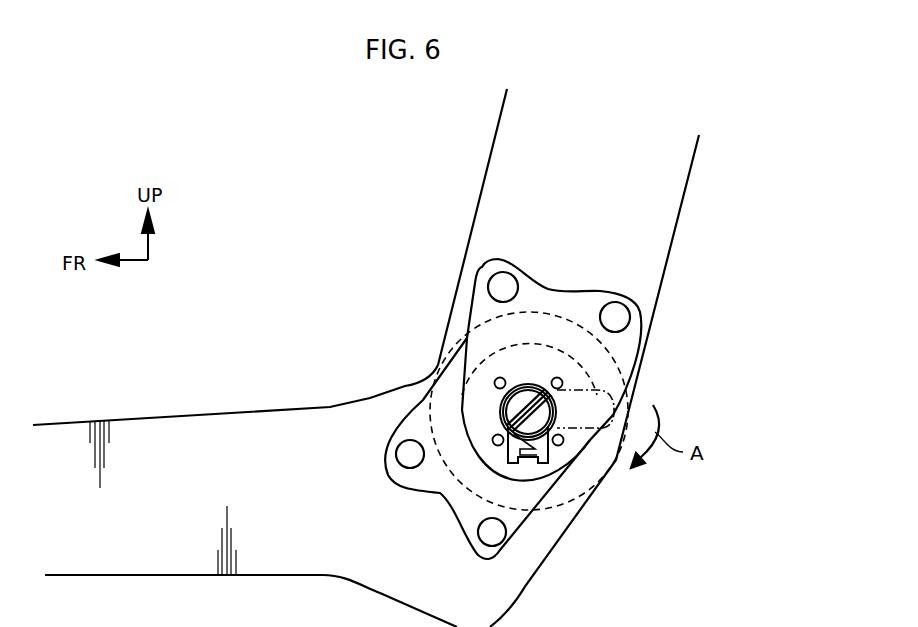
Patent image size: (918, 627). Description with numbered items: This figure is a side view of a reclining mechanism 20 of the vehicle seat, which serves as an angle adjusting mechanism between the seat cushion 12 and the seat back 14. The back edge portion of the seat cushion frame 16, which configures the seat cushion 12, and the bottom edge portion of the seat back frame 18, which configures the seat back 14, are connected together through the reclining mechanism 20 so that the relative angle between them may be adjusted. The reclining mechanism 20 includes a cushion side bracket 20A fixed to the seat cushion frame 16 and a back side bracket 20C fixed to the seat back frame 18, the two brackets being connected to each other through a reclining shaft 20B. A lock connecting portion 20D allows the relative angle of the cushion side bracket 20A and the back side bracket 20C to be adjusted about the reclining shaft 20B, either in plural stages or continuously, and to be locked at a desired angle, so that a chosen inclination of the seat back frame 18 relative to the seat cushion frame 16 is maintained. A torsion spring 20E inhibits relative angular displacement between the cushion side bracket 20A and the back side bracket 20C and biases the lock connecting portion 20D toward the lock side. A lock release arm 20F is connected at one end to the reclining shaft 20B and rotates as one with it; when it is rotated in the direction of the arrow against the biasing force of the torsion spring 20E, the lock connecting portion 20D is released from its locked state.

The seat cushion 12 is at (245, 491).
The seat back 14 is at (534, 358).
The seat cushion frame 16 is at (175, 433).
The seat back frame 18 is at (507, 170).
The reclining mechanism 20 is at (657, 302).
The cushion side bracket 20A is at (513, 518).
The reclining shaft 20B is at (520, 385).
The back side bracket 20C is at (618, 345).
The lock connecting portion 20D is at (575, 340).
The torsion spring 20E is at (438, 494).
The lock release arm 20F is at (614, 420).